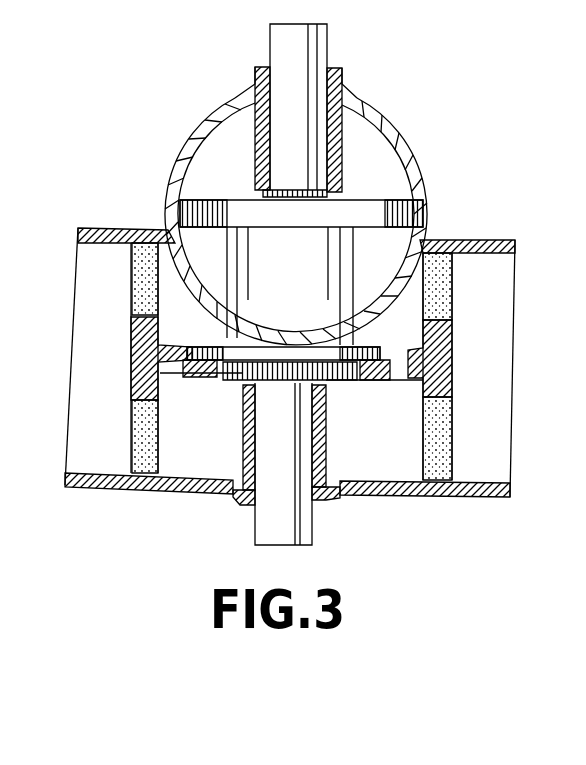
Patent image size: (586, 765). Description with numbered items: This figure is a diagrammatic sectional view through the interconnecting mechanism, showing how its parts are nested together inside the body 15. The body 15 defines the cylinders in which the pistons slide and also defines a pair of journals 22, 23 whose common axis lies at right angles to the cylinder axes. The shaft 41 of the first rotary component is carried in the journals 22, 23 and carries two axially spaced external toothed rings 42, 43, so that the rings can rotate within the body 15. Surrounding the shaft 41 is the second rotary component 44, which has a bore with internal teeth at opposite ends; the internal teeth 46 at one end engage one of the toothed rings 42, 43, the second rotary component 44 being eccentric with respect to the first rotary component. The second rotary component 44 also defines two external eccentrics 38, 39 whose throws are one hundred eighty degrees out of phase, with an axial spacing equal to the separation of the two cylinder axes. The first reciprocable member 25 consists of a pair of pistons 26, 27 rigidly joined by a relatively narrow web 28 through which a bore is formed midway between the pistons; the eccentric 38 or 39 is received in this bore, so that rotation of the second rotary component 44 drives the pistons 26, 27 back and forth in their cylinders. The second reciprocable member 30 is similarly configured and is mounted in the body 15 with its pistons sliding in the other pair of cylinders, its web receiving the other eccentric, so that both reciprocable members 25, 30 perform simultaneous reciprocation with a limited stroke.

The body 15 is at (122, 490).
The journal 22 is at (244, 465).
The journal 23 is at (345, 87).
The first reciprocable member 25 is at (414, 162).
The piston 26 is at (148, 303).
The piston 27 is at (442, 282).
The web 28 is at (170, 373).
The second reciprocable member 30 is at (449, 408).
The external eccentric 38 is at (243, 210).
The external eccentric 39 is at (423, 337).
The shaft 41 is at (282, 135).
The external toothed ring 42 is at (337, 387).
The external toothed ring 43 is at (262, 188).
The second rotary component 44 is at (302, 286).
The internal teeth 46 is at (360, 385).